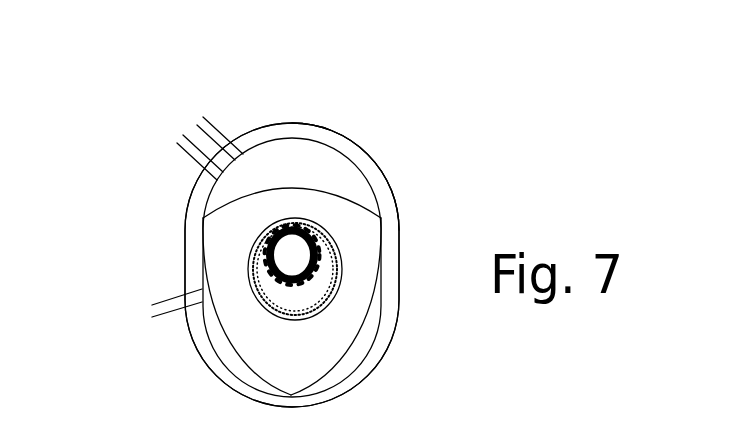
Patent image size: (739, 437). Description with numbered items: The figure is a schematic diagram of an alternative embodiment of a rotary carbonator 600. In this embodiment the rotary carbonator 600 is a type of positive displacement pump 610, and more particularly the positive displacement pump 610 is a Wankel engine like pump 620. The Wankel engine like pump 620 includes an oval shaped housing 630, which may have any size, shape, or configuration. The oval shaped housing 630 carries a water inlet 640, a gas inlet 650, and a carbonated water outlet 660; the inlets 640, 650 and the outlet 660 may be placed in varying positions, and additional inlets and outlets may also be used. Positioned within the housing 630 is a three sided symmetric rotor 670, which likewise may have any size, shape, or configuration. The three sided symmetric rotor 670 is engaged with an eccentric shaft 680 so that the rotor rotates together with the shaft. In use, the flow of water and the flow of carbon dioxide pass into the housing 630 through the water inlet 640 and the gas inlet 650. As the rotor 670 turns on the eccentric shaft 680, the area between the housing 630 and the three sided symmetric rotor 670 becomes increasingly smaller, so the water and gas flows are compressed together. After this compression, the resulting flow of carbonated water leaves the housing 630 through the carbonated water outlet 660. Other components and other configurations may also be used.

The rotary carbonator 600 is at (100, 79).
The positive displacement pump 610 is at (176, 216).
The Wankel engine like pump 620 is at (176, 216).
The oval shaped housing 630 is at (363, 146).
The water inlet 640 is at (193, 142).
The gas inlet 650 is at (222, 128).
The carbonated water outlet 660 is at (172, 297).
The three sided symmetric rotor 670 is at (293, 187).
The eccentric shaft 680 is at (307, 278).